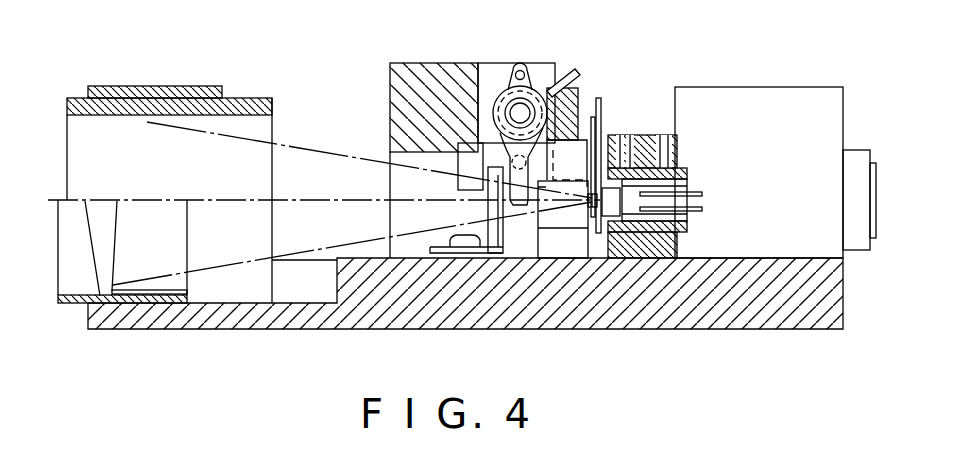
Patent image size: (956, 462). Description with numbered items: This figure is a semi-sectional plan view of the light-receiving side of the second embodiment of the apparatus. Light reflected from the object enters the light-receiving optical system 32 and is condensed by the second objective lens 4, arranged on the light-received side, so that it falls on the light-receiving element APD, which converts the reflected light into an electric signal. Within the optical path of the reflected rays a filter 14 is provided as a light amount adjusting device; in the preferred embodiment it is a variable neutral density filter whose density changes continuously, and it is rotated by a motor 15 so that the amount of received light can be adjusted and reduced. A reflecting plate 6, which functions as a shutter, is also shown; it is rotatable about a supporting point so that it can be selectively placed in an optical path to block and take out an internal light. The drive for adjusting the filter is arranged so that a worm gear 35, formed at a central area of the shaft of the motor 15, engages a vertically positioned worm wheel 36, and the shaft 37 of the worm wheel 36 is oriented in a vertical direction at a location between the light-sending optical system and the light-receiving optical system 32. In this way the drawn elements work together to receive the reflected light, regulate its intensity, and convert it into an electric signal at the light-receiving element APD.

The second objective lens 4 is at (90, 260).
The reflecting plate 6 is at (582, 84).
The filter 14 is at (603, 108).
The motor 15 is at (495, 72).
The light-receiving optical system 32 is at (347, 197).
The worm gear 35 is at (504, 102).
The worm wheel 36 is at (517, 204).
The shaft of the worm wheel 37 is at (497, 154).
The light-receiving element APD is at (599, 216).